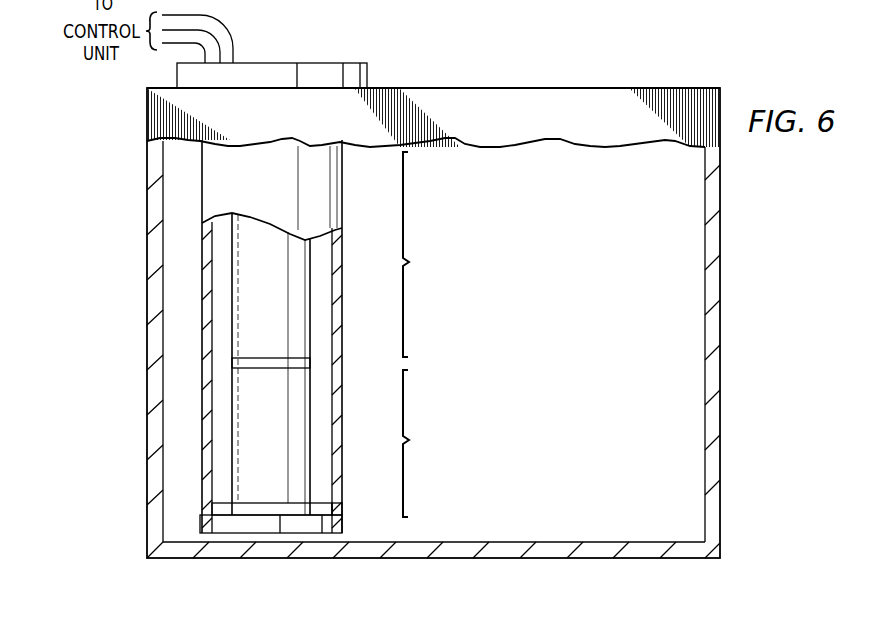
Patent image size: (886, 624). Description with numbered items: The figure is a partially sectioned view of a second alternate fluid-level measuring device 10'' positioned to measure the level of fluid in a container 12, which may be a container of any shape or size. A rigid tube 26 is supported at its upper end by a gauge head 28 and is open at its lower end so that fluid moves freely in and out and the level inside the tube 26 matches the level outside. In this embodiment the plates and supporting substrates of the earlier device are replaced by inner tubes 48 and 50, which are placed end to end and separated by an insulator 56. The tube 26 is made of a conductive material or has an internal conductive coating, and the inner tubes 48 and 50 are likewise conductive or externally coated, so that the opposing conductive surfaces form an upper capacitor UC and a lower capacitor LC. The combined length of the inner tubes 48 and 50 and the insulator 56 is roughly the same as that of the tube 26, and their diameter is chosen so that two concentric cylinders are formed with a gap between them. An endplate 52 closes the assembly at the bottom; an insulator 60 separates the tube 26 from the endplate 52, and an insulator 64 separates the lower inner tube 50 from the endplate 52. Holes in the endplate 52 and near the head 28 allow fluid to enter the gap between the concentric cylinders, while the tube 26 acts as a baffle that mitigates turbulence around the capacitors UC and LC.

The fluid-level measuring device 10'' is at (610, 21).
The container 12 is at (508, 88).
The tube 26 is at (344, 209).
The gauge head 28 is at (272, 63).
The inner tube 48 is at (250, 220).
The inner tube 50 is at (253, 506).
The endplate 52 is at (300, 530).
The insulator 56 is at (267, 369).
The insulator 60 is at (343, 510).
The insulator 64 is at (274, 512).
The upper capacitor UC is at (423, 254).
The lower capacitor LC is at (421, 443).